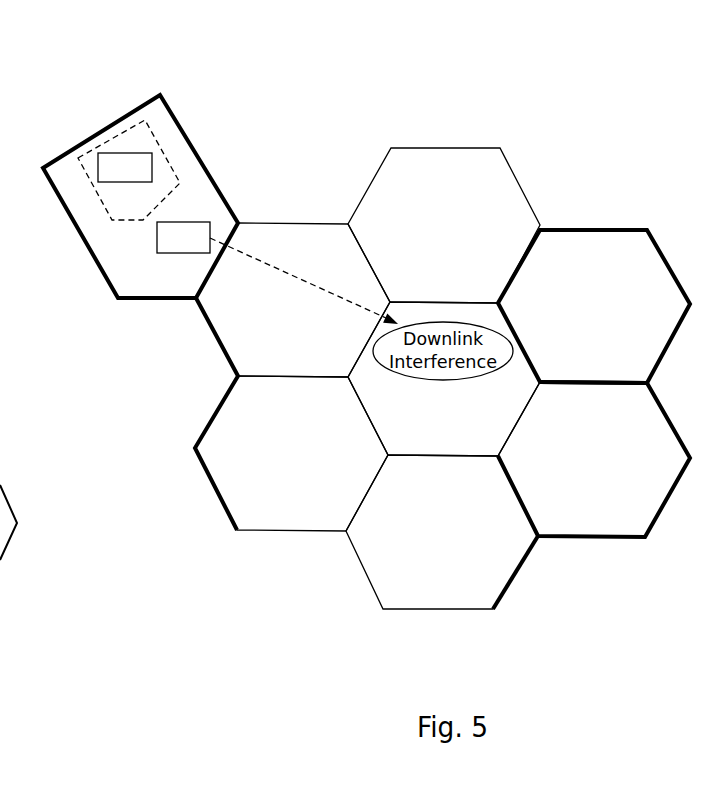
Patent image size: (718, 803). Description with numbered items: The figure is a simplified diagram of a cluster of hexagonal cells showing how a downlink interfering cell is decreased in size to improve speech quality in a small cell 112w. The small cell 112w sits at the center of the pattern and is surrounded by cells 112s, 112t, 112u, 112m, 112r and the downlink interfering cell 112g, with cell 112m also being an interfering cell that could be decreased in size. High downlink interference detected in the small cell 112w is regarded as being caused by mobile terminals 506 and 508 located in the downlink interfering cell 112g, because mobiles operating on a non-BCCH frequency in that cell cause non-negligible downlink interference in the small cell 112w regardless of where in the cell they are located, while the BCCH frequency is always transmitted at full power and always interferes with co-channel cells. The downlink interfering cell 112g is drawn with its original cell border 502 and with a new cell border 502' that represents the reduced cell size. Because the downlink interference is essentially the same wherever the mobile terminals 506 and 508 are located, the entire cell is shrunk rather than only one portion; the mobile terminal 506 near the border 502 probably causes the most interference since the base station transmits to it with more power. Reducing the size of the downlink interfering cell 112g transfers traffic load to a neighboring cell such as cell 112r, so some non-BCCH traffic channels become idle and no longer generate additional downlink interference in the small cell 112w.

The downlink interfering cell 112g is at (262, 401).
The neighboring cell 112r is at (293, 300).
The cell 112s is at (444, 225).
The cell 112t is at (594, 306).
The small cell 112w is at (444, 379).
The cell 112u is at (594, 459).
The interfering cell 112m is at (442, 532).
The cell border 502 is at (140, 172).
The new cell border 502' is at (98, 142).
The mobile terminal 506 is at (277, 273).
The mobile terminal 508 is at (125, 167).